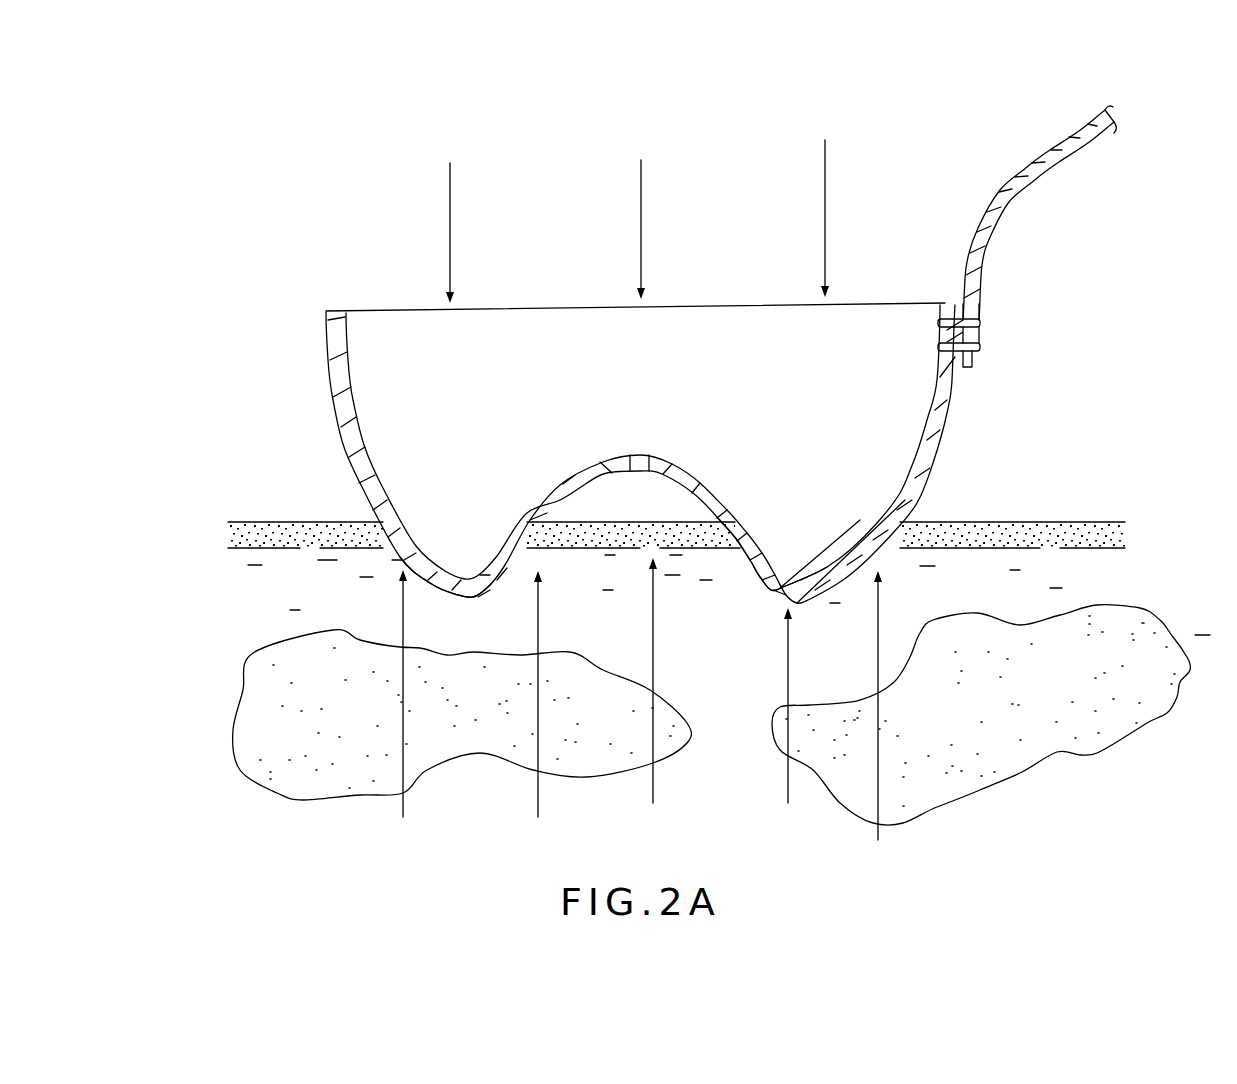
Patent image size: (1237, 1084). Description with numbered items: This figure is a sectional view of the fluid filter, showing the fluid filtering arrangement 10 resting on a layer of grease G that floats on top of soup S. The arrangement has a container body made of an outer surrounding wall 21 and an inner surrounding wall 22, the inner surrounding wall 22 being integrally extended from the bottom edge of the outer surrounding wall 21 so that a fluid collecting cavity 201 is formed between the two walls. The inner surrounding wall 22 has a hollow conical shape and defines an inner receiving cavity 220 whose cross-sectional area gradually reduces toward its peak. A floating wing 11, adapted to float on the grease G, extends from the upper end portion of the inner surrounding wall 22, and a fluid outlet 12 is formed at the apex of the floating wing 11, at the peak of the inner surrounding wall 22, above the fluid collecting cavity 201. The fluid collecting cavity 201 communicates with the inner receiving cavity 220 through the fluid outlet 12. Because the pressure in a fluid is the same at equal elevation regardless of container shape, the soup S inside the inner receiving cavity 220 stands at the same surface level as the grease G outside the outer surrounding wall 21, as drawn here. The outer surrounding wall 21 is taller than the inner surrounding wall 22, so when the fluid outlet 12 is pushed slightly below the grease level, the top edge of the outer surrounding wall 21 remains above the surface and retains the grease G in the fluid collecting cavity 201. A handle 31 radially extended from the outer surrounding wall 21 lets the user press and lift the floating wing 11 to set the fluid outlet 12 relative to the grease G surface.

The fluid filtering arrangement 10 is at (538, 230).
The floating wing 11 is at (607, 465).
The fluid outlet 12 is at (642, 447).
The fluid collecting cavity 201 is at (794, 452).
The inner surrounding wall 22 is at (557, 493).
The outer surrounding wall 21 is at (343, 403).
The inner receiving cavity 220 is at (579, 565).
The handle 31 is at (990, 237).
The grease G is at (667, 533).
The soup S is at (677, 577).